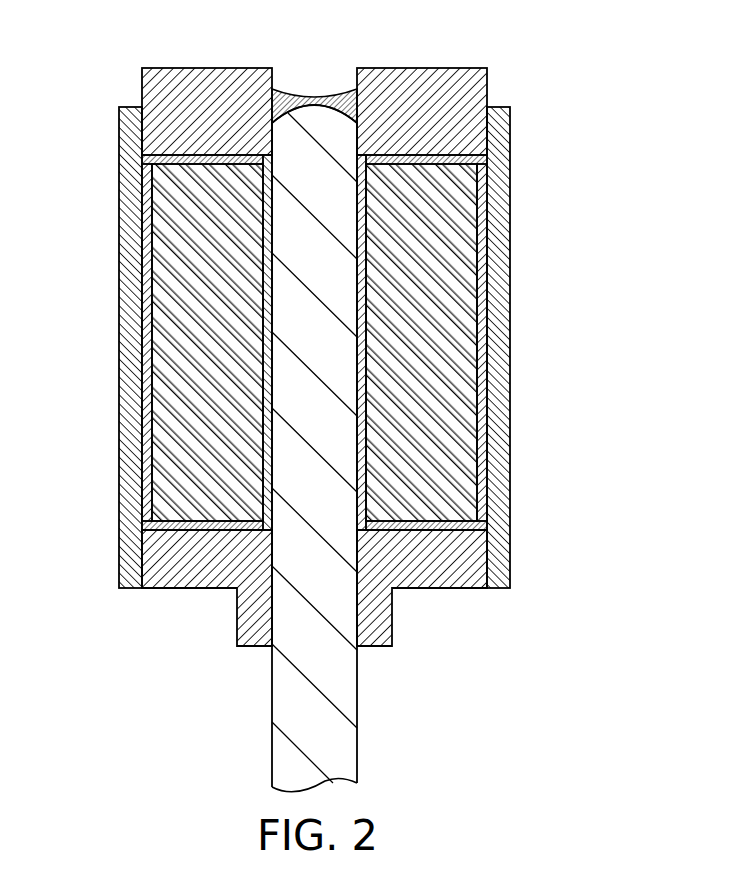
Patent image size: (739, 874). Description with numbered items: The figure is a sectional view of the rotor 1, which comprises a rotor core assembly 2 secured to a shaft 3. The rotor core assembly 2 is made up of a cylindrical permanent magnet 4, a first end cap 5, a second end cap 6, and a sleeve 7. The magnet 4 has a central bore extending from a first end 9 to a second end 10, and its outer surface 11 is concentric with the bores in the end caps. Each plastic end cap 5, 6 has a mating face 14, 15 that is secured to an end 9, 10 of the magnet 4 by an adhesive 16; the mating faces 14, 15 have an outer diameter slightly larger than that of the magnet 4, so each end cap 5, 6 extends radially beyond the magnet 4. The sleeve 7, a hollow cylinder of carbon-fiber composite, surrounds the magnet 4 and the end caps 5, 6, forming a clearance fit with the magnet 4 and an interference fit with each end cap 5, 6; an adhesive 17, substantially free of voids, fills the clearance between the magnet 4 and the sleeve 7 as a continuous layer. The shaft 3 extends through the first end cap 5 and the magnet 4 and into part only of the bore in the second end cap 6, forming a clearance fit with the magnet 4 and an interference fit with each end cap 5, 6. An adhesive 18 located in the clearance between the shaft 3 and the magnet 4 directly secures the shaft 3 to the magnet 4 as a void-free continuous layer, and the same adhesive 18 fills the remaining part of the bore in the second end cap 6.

The rotor 1 is at (521, 78).
The rotor core assembly 2 is at (118, 196).
The shaft 3 is at (360, 705).
The permanent magnet 4 is at (468, 352).
The first end cap 5 is at (470, 588).
The second end cap 6 is at (442, 68).
The sleeve 7 is at (119, 459).
The first end 9 is at (458, 518).
The second end 10 is at (478, 183).
The outer surface 11 is at (152, 380).
The mating face 14 is at (185, 530).
The mating face 15 is at (218, 157).
The adhesive 16 is at (402, 150).
The adhesive 17 is at (147, 287).
The adhesive 18 is at (314, 92).